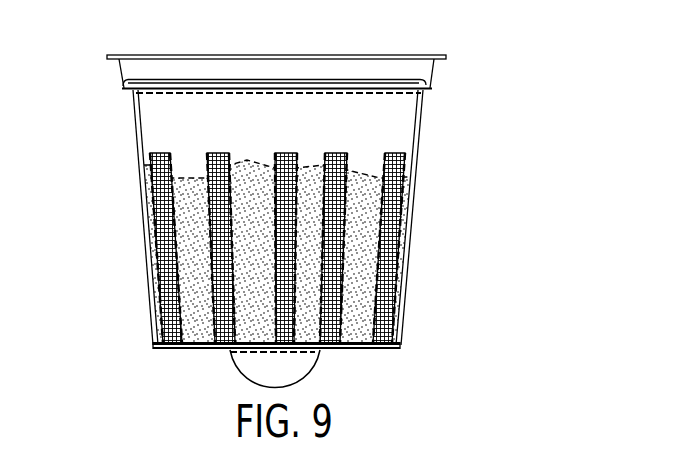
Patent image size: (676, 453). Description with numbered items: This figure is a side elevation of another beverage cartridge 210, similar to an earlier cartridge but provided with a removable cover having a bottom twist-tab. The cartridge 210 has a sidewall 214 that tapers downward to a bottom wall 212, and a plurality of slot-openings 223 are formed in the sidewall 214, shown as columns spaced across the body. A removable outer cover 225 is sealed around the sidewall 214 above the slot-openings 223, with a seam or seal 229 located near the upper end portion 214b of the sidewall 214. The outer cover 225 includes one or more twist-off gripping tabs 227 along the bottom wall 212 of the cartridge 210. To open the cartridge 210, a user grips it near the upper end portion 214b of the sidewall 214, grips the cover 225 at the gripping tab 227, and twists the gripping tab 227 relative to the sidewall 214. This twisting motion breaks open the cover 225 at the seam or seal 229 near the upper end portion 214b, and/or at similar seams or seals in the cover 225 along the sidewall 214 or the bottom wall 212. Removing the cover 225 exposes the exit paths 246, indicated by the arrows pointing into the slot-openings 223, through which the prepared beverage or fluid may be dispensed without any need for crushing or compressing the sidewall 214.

The beverage cartridge 210 is at (544, 49).
The upper end portion 214b is at (102, 72).
The removable outer cover 225 is at (133, 118).
The seam or seal 229 is at (192, 92).
The sidewall 214 is at (138, 162).
The slot-openings 223 is at (273, 155).
The exit paths 246 is at (200, 257).
The bottom wall 212 is at (360, 350).
The twist-off gripping tab 227 is at (240, 351).